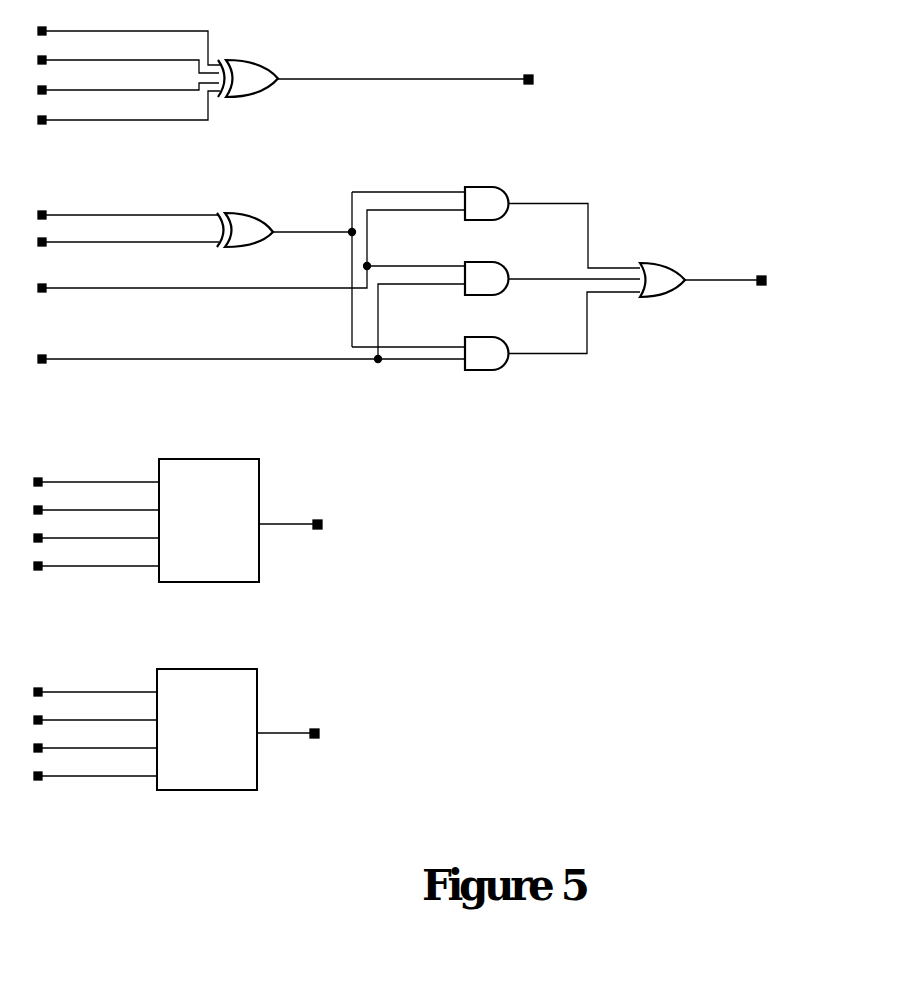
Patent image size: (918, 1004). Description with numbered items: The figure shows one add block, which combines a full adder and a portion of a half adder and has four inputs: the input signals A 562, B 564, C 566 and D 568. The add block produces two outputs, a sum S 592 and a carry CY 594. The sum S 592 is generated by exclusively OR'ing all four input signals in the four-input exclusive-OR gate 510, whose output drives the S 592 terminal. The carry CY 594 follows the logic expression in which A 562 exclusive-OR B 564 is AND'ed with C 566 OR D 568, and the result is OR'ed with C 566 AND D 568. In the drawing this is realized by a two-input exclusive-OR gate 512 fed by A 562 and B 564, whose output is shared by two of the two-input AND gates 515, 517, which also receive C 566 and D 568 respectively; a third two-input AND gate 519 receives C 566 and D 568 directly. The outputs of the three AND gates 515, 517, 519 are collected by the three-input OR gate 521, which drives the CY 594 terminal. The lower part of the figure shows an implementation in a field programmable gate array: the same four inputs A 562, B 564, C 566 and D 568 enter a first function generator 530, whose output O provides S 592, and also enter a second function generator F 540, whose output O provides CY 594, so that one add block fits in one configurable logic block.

The XOR 510 is at (262, 62).
The two-input exclusive-OR gate XOR2 512 is at (252, 214).
The two-input AND gate AND2 515 is at (503, 187).
The two-input AND gate AND2 517 is at (509, 272).
The two-input AND gate AND2 519 is at (510, 346).
The three-input OR gate OR3 521 is at (668, 263).
The first function generator 530 is at (251, 459).
The second function generator F 540 is at (246, 669).
The input signal A 562 is at (127, 352).
The input signal B 564 is at (126, 381).
The input signal C 566 is at (249, 410).
The input signal D 568 is at (249, 435).
The sum S 592 is at (426, 303).
The carry CY 594 is at (554, 507).